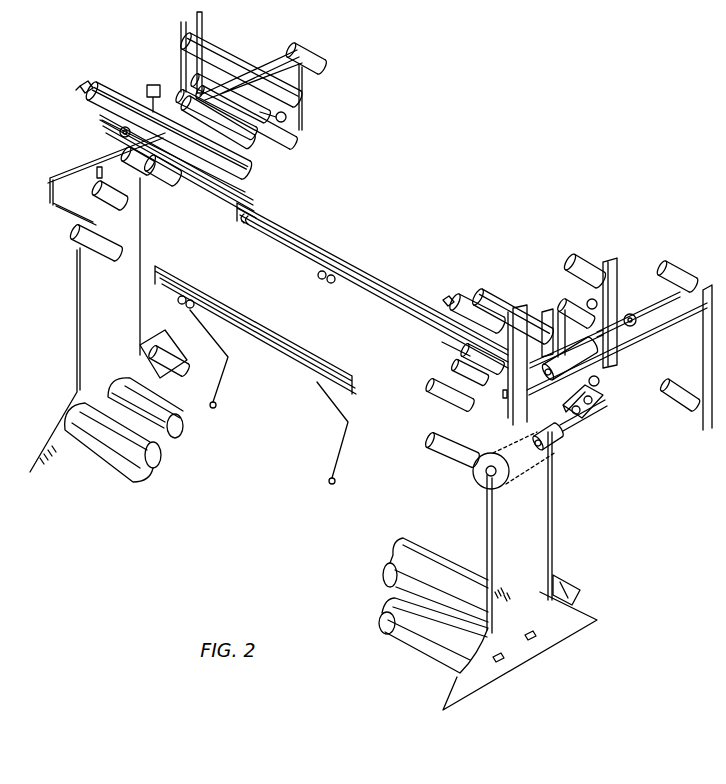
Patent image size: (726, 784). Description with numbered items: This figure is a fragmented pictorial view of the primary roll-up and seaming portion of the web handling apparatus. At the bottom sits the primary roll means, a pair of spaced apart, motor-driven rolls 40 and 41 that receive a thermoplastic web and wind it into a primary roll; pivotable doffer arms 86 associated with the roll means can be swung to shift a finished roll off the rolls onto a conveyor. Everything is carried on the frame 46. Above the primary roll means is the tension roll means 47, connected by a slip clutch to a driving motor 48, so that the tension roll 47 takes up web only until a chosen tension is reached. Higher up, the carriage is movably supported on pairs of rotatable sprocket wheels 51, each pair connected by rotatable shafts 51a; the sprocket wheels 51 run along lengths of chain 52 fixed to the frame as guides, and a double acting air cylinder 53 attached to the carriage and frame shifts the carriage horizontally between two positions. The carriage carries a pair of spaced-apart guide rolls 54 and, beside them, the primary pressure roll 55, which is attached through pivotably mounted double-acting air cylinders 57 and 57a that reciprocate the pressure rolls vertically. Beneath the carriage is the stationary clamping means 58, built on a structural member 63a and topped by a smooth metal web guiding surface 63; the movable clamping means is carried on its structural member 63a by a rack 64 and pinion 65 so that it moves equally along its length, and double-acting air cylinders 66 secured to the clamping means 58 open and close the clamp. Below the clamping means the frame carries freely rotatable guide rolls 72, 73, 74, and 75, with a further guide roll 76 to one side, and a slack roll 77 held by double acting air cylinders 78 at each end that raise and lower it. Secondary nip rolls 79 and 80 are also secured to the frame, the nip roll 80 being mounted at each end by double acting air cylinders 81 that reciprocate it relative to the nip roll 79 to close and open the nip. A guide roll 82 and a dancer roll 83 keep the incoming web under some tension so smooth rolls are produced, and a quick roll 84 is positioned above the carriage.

The roll 40 is at (183, 430).
The roll 41 is at (126, 484).
The frame 46 is at (76, 280).
The tension roll means 47 is at (74, 240).
The driving motor 48 is at (558, 448).
The sprocket wheels 51 is at (102, 120).
The rotatable shafts 51a is at (120, 132).
The chain 52 is at (52, 180).
The double acting air cylinder 53 is at (655, 302).
The guide rolls 54 is at (254, 143).
The primary pressure roll 55 is at (294, 144).
The double-acting air cylinders 57 is at (155, 86).
The double-acting air cylinders 57a is at (196, 72).
The clamping means 58 is at (599, 382).
The web guiding surface 63 is at (217, 186).
The structural member 63a is at (197, 191).
The rack 64 is at (320, 280).
The pinion 65 is at (332, 284).
The double-acting air cylinders 66 is at (592, 398).
The guide roll 72 is at (174, 193).
The guide roll 73 is at (587, 420).
The guide roll 74 is at (606, 405).
The guide roll 75 is at (176, 352).
The guide roll 76 is at (143, 186).
The slack roll 77 is at (120, 210).
The double acting air cylinders 78 is at (96, 170).
The secondary nip roll 79 is at (82, 95).
The secondary nip roll 80 is at (126, 84).
The double acting air cylinders 81 is at (118, 72).
The guide roll 82 is at (316, 48).
The dancer roll 83 is at (688, 408).
The quick roll 84 is at (230, 50).
The doffer arms 86 is at (222, 385).